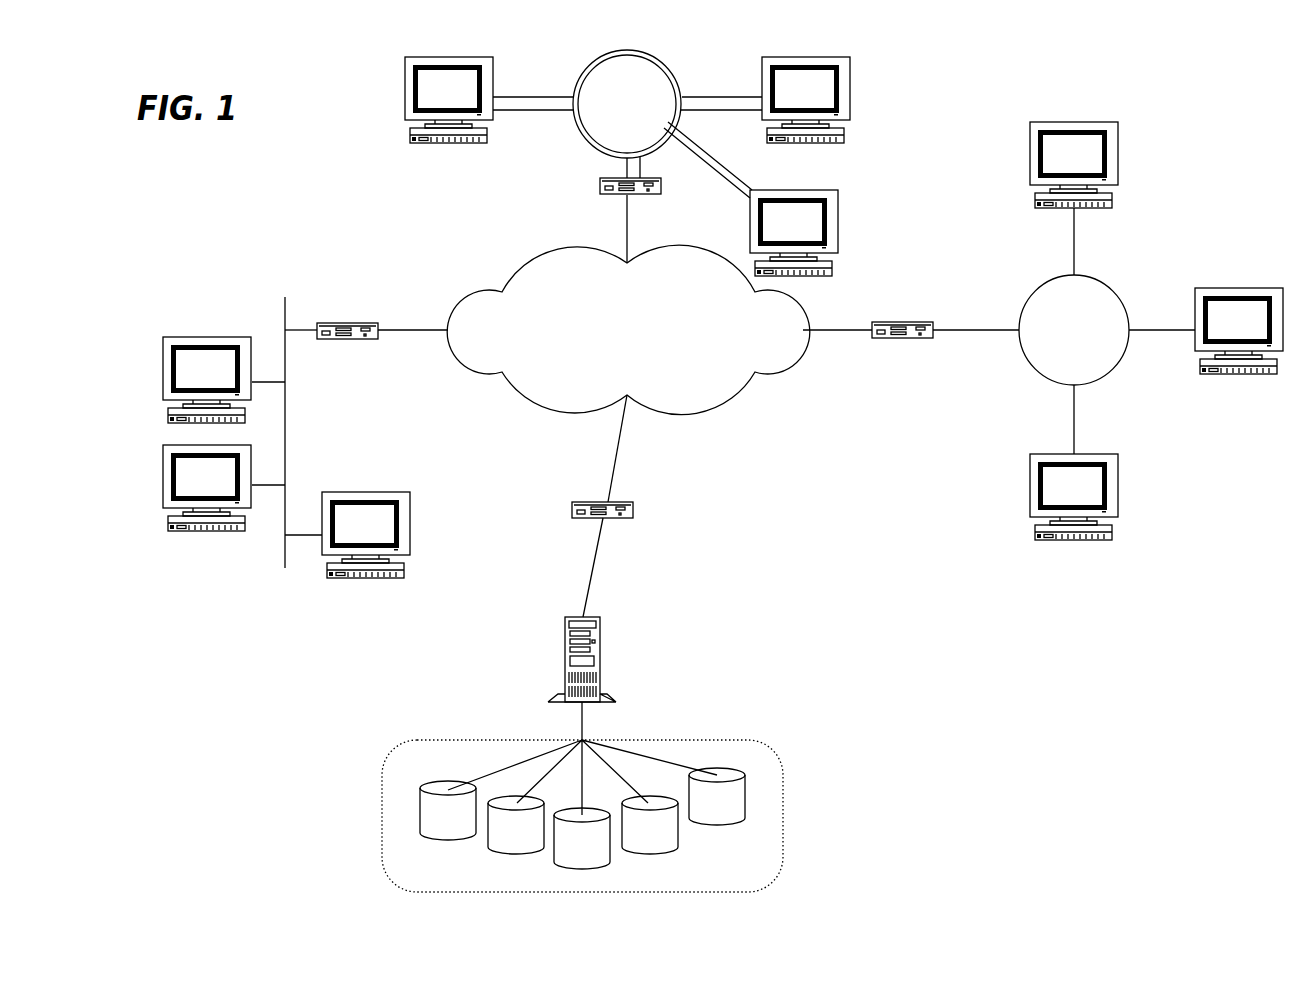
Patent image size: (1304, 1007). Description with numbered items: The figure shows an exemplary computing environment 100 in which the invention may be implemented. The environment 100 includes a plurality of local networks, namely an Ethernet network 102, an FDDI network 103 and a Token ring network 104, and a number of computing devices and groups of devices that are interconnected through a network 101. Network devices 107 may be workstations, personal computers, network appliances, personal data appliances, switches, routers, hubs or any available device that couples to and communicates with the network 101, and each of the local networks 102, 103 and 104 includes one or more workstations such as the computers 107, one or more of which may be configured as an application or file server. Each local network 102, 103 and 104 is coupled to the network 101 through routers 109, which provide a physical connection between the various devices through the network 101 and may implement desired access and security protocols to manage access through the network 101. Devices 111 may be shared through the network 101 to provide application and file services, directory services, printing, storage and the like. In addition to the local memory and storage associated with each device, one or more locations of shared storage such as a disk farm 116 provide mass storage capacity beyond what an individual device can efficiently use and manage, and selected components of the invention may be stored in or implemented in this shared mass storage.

The computing environment 100 is at (1200, 100).
The network 101 is at (489, 275).
The Ethernet network 102 is at (209, 272).
The FDDI network 103 is at (485, 187).
The Token ring network 104 is at (1190, 459).
The network devices 107 is at (322, 573).
The routers 109 is at (383, 337).
The devices 111 is at (600, 652).
The disk farm 116 is at (785, 820).